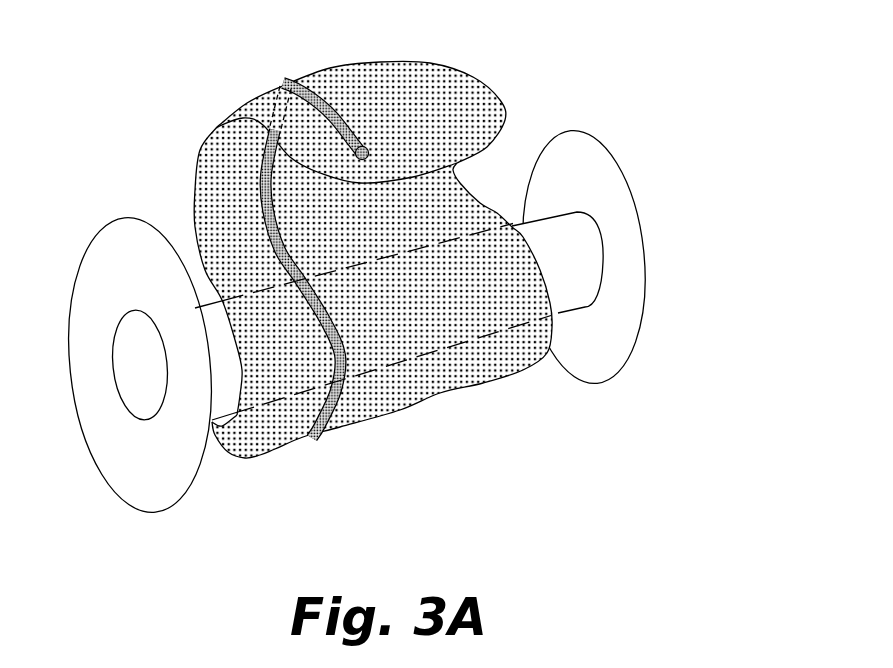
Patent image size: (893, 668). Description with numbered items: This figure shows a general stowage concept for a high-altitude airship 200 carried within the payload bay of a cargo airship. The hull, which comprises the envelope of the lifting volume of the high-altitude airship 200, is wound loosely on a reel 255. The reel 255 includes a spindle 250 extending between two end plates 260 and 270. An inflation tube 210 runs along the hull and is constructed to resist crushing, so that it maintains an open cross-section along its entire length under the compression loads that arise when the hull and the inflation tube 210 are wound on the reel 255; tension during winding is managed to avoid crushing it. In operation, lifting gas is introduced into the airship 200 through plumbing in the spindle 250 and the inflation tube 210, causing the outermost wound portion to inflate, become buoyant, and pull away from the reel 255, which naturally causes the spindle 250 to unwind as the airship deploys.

The high-altitude airship 200 is at (372, 77).
The inflation tube 210 is at (313, 437).
The spindle 250 is at (560, 303).
The reel 255 is at (666, 128).
The end plate 260 is at (622, 325).
The end plate 270 is at (162, 492).